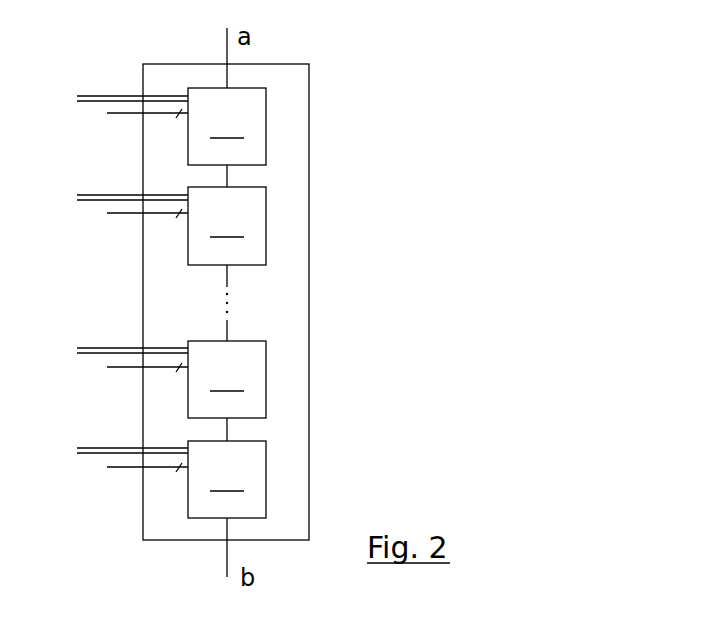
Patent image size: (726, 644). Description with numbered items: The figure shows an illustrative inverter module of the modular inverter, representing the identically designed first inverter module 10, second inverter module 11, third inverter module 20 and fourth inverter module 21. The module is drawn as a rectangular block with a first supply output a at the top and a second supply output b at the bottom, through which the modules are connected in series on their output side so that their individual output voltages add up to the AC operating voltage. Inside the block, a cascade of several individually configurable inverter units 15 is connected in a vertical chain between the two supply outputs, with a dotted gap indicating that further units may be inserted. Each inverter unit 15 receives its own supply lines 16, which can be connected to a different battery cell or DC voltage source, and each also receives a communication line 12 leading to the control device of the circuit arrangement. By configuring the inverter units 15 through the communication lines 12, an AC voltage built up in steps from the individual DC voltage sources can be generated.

The first inverter module 10 is at (371, 141).
The second inverter module 11 is at (378, 302).
The communication lines 12 is at (118, 114).
The inverter units 15 is at (227, 303).
The supply lines 16 is at (92, 96).
The third inverter module 20 is at (378, 302).
The fourth inverter module 21 is at (378, 302).